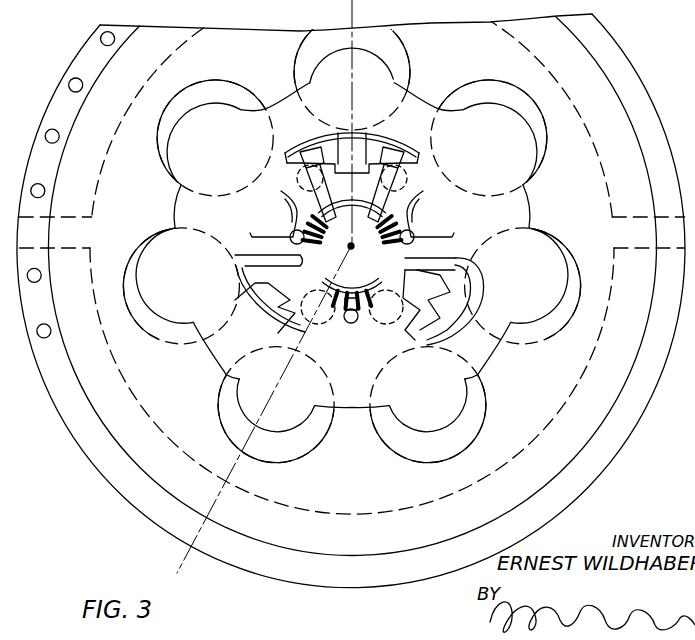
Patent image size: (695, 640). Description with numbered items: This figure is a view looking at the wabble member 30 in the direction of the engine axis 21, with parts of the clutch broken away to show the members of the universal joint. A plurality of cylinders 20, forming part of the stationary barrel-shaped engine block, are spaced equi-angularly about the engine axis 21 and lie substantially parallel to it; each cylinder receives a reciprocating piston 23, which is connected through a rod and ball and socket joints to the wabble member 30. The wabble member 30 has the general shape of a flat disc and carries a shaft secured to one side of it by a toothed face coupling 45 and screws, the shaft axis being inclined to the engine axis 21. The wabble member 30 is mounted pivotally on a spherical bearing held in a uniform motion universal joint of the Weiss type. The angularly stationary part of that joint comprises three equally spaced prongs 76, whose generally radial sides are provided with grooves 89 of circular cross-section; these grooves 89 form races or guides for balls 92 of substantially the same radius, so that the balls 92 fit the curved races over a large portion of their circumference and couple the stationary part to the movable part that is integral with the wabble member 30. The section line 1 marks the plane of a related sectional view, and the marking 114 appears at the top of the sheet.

The cylinders 20 is at (641, 400).
The piston 23 is at (458, 92).
The wabble member 30 is at (466, 358).
The engine axis 21 is at (352, 186).
The toothed face coupling 45 is at (352, 262).
The prongs 76 is at (352, 235).
The grooves 89 is at (310, 330).
The balls 92 is at (313, 323).
The section line 1 is at (180, 567).
The section mark 114 is at (348, 6).